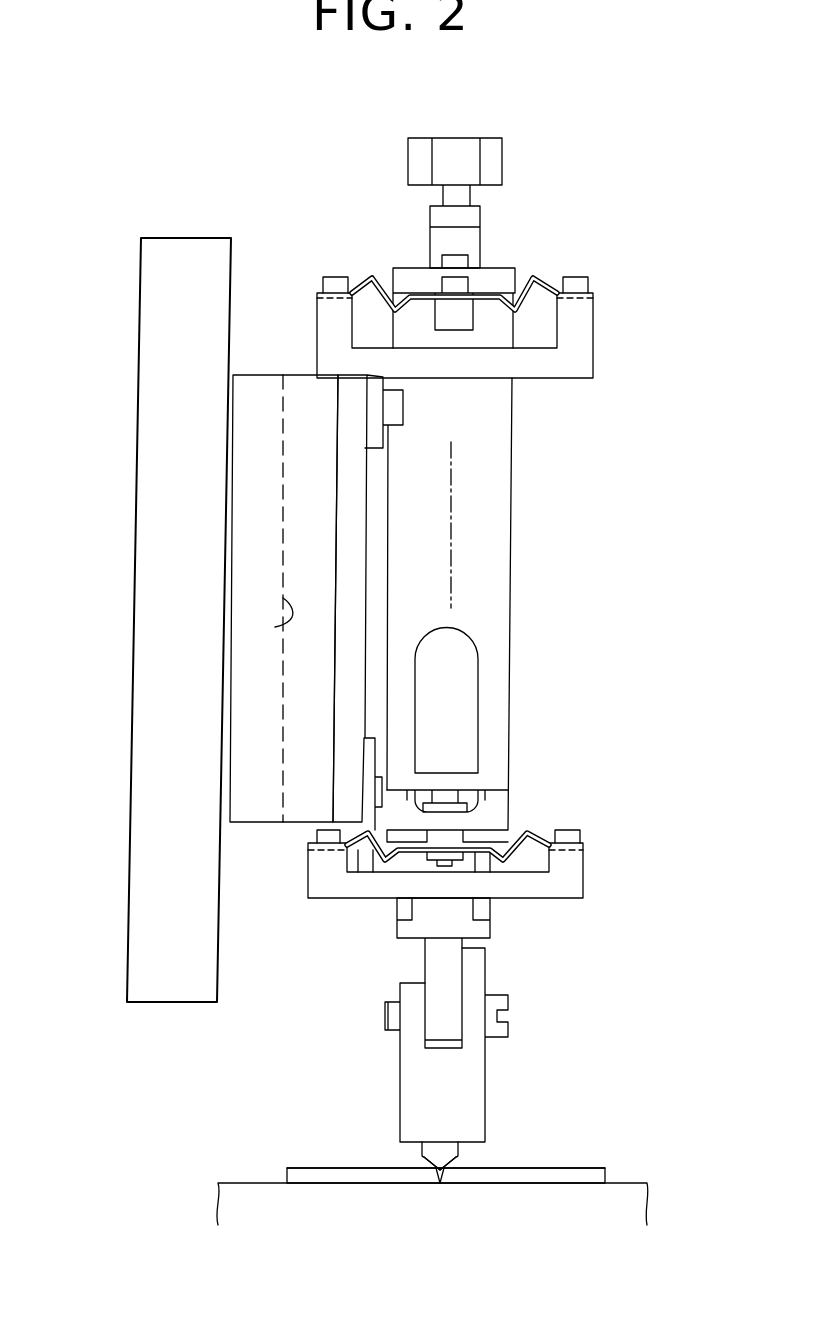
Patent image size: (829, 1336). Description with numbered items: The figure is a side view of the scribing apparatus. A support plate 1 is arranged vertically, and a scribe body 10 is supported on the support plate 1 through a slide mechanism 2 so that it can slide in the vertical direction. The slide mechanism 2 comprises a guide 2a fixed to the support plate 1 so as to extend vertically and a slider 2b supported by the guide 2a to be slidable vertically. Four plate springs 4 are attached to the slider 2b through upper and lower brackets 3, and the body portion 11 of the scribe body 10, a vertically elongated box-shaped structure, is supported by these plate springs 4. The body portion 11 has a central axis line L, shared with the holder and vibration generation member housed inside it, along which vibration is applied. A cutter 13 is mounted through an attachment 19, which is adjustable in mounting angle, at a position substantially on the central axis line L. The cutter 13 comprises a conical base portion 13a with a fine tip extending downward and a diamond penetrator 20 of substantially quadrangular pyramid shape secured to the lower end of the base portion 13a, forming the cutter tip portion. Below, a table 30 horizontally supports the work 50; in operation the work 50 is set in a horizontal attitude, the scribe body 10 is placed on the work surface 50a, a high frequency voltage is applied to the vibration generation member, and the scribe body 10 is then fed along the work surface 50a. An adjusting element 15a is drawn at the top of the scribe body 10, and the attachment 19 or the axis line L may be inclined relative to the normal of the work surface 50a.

The support plate 1 is at (165, 408).
The slide mechanism 2 is at (235, 531).
The guide 2a is at (275, 627).
The slider 2b is at (317, 543).
The bracket 3 is at (545, 379).
The plate spring 4 is at (487, 292).
The scribe body 10 is at (523, 697).
The body portion 11 is at (512, 594).
The cutter 13 is at (458, 1150).
The base portion 13a is at (420, 1152).
The adjusting knob 15a is at (470, 203).
The attachment 19 is at (485, 1075).
The penetrator 20 is at (440, 1183).
The table 30 is at (627, 1183).
The work 50 is at (469, 1169).
The work surface 50a is at (585, 1167).
The central axis line L is at (451, 505).